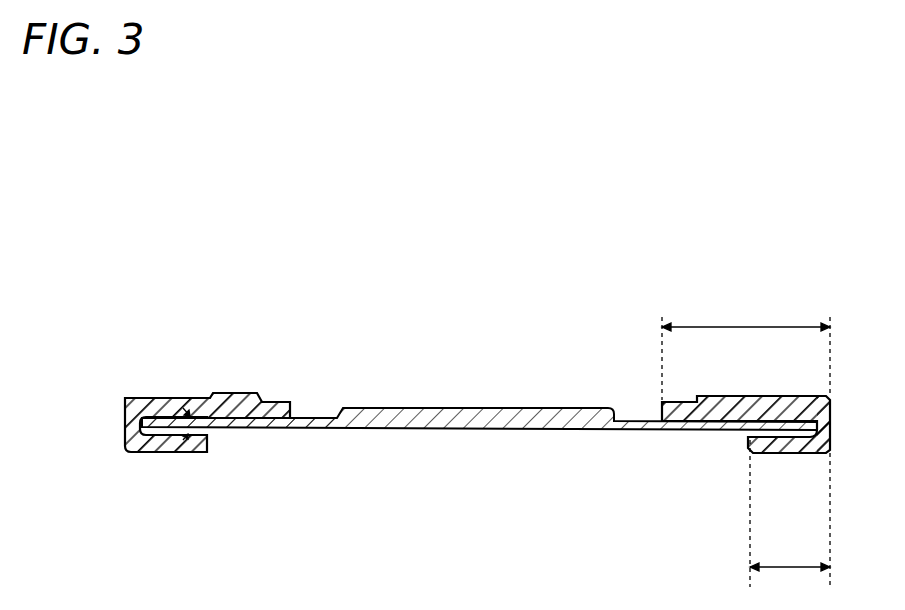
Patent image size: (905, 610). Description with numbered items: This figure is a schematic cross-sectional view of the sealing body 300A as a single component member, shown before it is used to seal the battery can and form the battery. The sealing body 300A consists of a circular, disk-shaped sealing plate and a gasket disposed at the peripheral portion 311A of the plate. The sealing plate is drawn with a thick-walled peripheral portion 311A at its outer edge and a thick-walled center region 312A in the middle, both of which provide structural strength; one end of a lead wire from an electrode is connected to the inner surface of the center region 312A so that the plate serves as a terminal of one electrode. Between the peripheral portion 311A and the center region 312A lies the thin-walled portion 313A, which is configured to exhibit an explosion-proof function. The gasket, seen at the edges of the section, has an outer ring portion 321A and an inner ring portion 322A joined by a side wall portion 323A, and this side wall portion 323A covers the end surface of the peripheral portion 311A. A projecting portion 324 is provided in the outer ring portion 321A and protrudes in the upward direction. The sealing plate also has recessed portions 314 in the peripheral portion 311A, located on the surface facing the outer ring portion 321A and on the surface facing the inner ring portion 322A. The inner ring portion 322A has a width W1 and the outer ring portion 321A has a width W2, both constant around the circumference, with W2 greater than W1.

The sealing body 300A is at (693, 268).
The peripheral portion 311A is at (166, 444).
The center region 312A is at (473, 418).
The thin-walled portion 313A is at (252, 434).
The recessed portions 314 is at (188, 410).
The outer ring portion 321A is at (720, 408).
The inner ring portion 322A is at (783, 453).
The side wall portion 323A is at (830, 423).
The projecting portion 324 is at (130, 398).